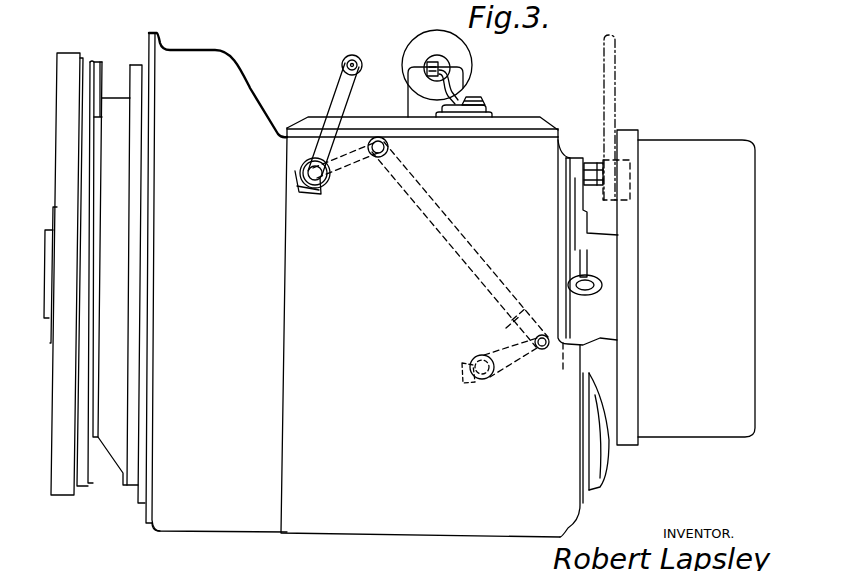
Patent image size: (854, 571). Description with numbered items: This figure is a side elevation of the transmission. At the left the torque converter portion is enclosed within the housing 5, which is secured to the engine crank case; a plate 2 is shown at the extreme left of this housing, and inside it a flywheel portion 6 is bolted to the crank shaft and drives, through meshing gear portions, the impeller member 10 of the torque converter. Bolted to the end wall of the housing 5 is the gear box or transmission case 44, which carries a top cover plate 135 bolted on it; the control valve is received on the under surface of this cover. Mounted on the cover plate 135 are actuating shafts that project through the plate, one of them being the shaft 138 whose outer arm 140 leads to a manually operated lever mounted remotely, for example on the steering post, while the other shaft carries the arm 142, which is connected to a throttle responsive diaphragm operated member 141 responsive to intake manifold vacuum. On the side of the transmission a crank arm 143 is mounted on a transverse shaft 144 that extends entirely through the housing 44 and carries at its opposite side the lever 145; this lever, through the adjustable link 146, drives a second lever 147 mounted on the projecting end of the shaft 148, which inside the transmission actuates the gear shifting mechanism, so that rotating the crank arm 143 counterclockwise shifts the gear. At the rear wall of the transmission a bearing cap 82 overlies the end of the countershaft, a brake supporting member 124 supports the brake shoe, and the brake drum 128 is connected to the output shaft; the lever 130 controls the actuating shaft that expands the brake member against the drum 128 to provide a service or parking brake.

The clutch plate 2 is at (66, 62).
The flywheel portion 6 is at (85, 60).
The impeller member 10 is at (118, 97).
The housing 5 is at (205, 63).
The transmission case 44 is at (357, 525).
The cover plate 135 is at (358, 122).
The diaphragm operated member 141 is at (418, 48).
The arm 142 is at (458, 73).
The actuating shaft 138 is at (475, 95).
The arm 140 is at (490, 108).
The crank arm 143 is at (342, 80).
The transverse shaft 144 is at (313, 197).
The lever 145 is at (352, 162).
The adjustable link 146 is at (465, 240).
The second lever 147 is at (503, 352).
The shaft 148 is at (482, 383).
The lever 130 is at (612, 85).
The brake supporting member 124 is at (603, 305).
The brake drum 128 is at (682, 147).
The bearing cap 82 is at (605, 465).